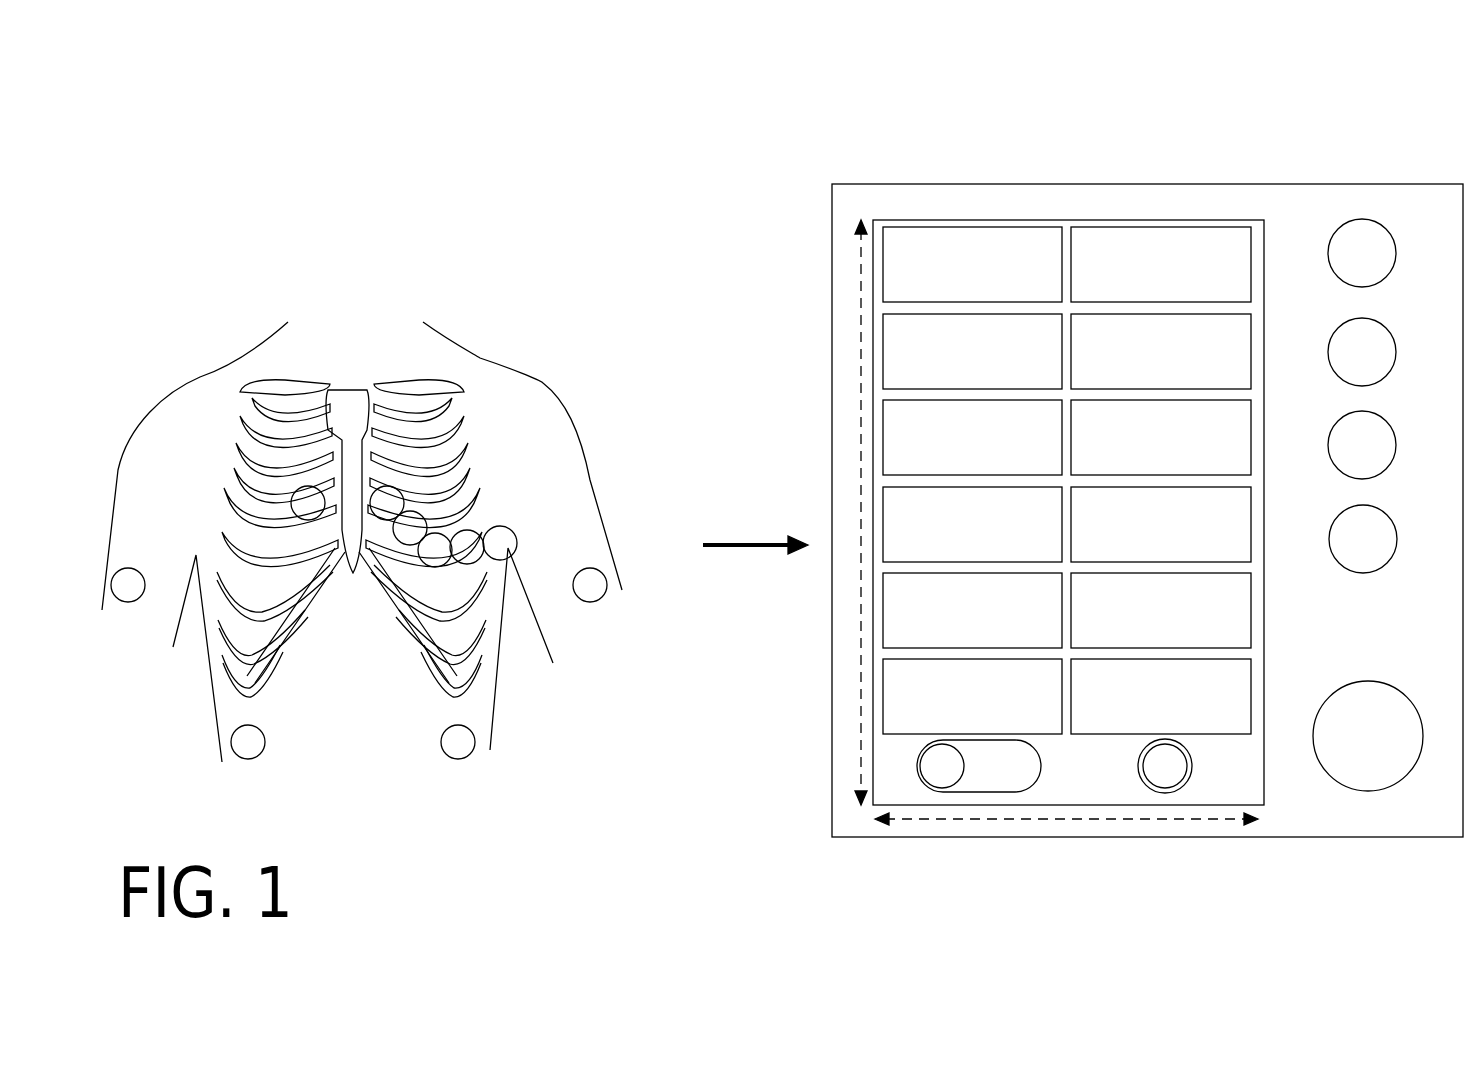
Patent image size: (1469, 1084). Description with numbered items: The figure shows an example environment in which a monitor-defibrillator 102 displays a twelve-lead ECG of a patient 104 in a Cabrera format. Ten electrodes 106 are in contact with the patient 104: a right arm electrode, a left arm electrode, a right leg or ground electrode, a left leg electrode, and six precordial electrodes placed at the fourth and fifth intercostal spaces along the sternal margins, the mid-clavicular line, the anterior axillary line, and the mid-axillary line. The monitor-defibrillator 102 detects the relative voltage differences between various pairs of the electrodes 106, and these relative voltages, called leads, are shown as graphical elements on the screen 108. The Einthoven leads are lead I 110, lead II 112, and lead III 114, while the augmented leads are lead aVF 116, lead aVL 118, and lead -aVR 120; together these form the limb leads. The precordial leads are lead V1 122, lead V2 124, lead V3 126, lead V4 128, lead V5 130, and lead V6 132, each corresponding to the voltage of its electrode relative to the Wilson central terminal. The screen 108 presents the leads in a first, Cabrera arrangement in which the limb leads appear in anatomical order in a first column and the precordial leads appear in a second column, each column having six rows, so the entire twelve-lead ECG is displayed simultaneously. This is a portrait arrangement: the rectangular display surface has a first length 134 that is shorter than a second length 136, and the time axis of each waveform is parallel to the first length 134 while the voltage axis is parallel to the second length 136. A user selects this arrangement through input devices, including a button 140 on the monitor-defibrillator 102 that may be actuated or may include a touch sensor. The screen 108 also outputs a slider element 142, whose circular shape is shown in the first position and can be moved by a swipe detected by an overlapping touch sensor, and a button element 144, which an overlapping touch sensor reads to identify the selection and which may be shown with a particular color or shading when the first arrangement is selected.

The monitor-defibrillator 102 is at (1114, 144).
The patient 104 is at (335, 193).
The electrodes 106 is at (453, 800).
The screen 108 is at (1264, 244).
The lead I 110 is at (955, 374).
The lead II 112 is at (955, 547).
The lead III 114 is at (955, 719).
The lead aVF 116 is at (955, 633).
The lead aVL 118 is at (955, 287).
The lead -aVR 120 is at (955, 460).
The lead V1 122 is at (1144, 287).
The lead V2 124 is at (1144, 374).
The lead V3 126 is at (1144, 460).
The lead V4 128 is at (1144, 547).
The lead V5 130 is at (1144, 633).
The lead V6 132 is at (1144, 719).
The first length 134 is at (1115, 821).
The second length 136 is at (857, 298).
The button 140 is at (1362, 219).
The slider element 142 is at (978, 792).
The button element 144 is at (1165, 793).